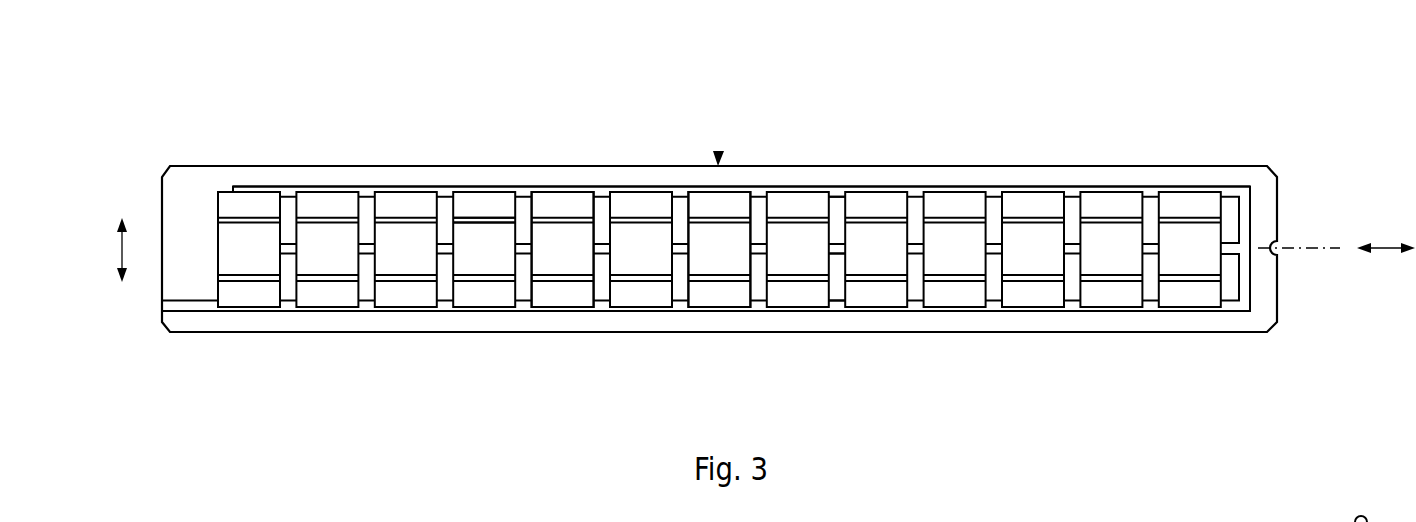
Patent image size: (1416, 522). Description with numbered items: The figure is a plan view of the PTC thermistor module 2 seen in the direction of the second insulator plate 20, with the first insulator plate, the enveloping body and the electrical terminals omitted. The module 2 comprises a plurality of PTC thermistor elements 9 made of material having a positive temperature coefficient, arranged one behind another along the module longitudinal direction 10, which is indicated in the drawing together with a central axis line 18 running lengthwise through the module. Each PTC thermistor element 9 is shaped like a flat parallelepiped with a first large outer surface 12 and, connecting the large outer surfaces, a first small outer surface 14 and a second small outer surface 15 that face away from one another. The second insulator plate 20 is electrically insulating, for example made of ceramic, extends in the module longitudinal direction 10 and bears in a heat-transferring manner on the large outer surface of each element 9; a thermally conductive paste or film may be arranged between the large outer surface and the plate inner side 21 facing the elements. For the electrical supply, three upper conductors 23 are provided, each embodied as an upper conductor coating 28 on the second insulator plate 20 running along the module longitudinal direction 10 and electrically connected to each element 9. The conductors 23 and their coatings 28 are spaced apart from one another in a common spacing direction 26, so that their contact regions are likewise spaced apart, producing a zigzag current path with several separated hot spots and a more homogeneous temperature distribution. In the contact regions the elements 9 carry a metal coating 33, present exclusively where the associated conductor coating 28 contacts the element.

The PTC thermistor module 2 is at (1313, 131).
The PTC thermistor element 9 is at (564, 322).
The module longitudinal direction 10 is at (1386, 244).
The first large outer surface 12 is at (628, 202).
The first small outer surface 14 is at (412, 310).
The second small outer surface 15 is at (409, 182).
The axis 18 is at (1318, 244).
The second insulator plate 20 is at (719, 152).
The plate inner side 21 is at (779, 173).
The upper conductor 23 is at (993, 192).
The common spacing direction 26 is at (117, 250).
The upper conductor coating 28 is at (837, 249).
The metal coating 33 is at (482, 217).